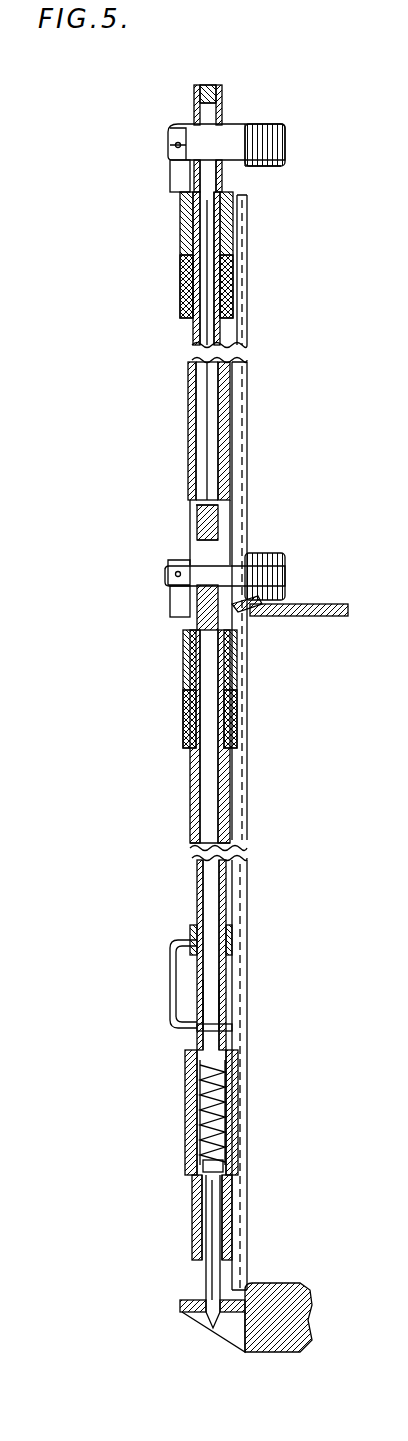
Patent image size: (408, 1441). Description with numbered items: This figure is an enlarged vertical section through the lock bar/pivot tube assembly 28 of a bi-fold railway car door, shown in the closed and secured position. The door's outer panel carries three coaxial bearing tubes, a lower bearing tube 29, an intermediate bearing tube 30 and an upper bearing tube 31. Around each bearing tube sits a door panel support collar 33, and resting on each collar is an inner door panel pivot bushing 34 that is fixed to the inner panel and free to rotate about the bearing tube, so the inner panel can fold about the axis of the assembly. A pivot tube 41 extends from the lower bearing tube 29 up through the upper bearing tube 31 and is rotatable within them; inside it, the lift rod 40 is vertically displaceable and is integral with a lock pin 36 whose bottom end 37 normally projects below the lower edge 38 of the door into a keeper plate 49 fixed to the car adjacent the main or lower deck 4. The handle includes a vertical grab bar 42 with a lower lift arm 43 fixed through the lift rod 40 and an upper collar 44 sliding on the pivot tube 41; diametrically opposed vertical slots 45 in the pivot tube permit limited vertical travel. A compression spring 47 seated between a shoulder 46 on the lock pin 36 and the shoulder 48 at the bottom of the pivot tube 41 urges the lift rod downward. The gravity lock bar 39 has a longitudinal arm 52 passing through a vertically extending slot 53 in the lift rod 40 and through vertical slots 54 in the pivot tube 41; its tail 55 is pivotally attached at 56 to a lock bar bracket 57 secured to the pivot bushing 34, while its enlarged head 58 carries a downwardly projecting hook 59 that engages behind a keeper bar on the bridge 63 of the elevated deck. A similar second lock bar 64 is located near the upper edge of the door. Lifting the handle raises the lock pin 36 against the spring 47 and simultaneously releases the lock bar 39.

The main or lower deck 4 is at (280, 1286).
The lock bar/pivot tube assembly 28 is at (190, 434).
The lower bearing tube 29 is at (196, 1196).
The intermediate bearing tube 30 is at (196, 833).
The upper bearing tube 31 is at (188, 388).
The door panel support collar 33 is at (185, 296).
The inner door panel pivot bushing 34 is at (185, 232).
The lock pin or plunger 36 is at (207, 1276).
The bottom end 37 is at (210, 1322).
The lower edge 38 is at (250, 1284).
The gravity lock bar 39 is at (296, 548).
The lift rod or actuating member 40 is at (208, 85).
The pivot tube 41 is at (198, 783).
The vertical grab bar 42 is at (166, 1006).
The lower lift arm 43 is at (232, 1030).
The collar 44 is at (232, 943).
The vertical slots 45 is at (204, 1018).
The shoulder 46 is at (222, 1166).
The compression spring 47 is at (225, 1112).
The shoulder 48 is at (190, 1078).
The keeper plate 49 is at (182, 1308).
The longitudinal arm 52 is at (210, 572).
The vertically extending slot 53 is at (212, 550).
The vertical slots 54 is at (196, 512).
The tail 55 is at (166, 574).
The pivotal attachment 56 is at (176, 576).
The lock bar bracket 57 is at (182, 608).
The enlarged head 58 is at (286, 575).
The hook 59 is at (258, 605).
The bridge 63 is at (318, 616).
The second lock bar 64 is at (273, 126).